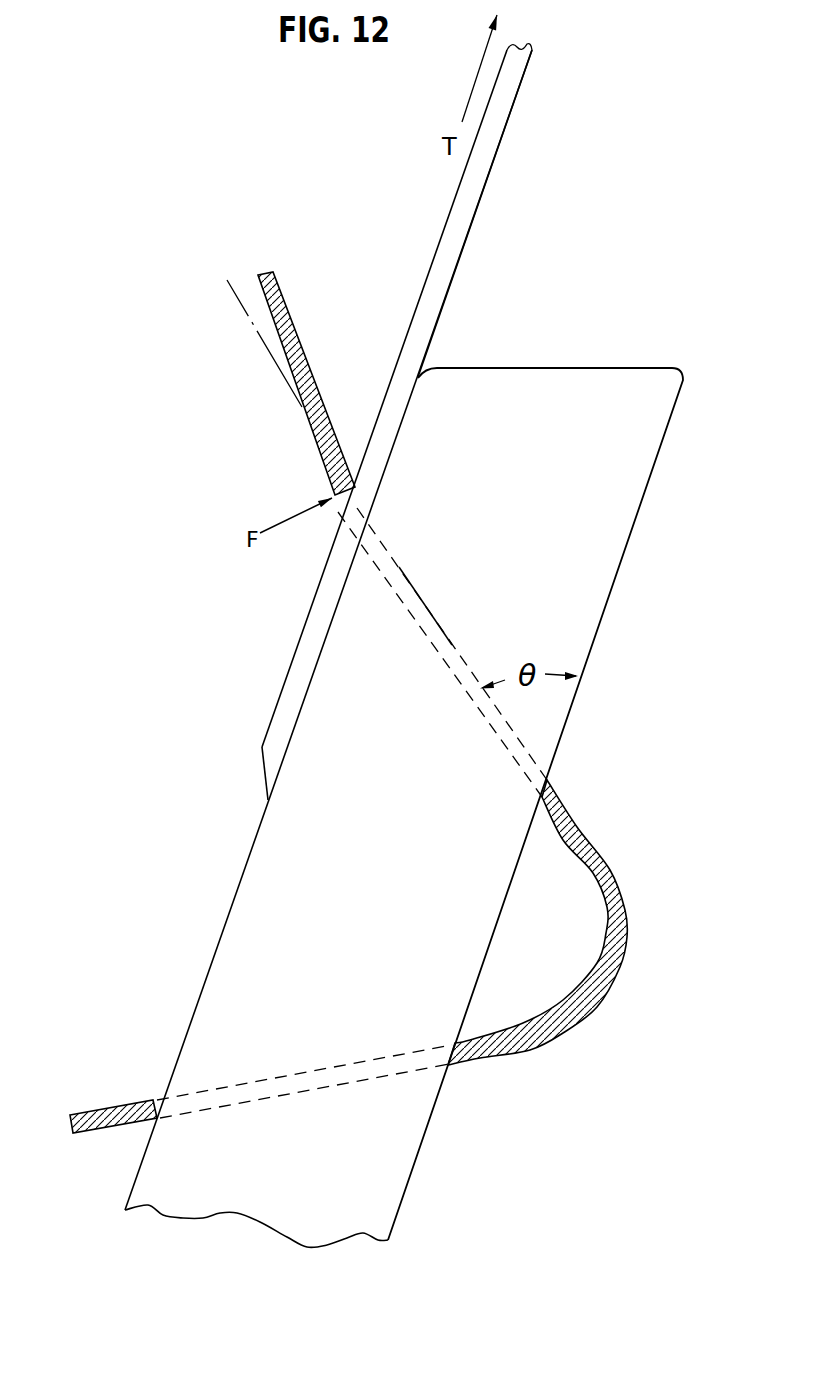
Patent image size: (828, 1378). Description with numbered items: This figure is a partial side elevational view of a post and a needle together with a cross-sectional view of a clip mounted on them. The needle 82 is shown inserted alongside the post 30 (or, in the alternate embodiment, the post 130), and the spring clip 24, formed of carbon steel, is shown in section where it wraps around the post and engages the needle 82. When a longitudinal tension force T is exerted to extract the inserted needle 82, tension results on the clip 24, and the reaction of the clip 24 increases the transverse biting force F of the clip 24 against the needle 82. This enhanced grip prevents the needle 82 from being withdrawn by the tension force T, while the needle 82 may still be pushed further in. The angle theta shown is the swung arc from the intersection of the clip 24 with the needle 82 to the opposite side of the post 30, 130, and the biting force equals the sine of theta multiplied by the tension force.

The needle 82 is at (466, 231).
The post 30 is at (435, 648).
The post 130 is at (597, 588).
The spring clip 24 is at (627, 942).